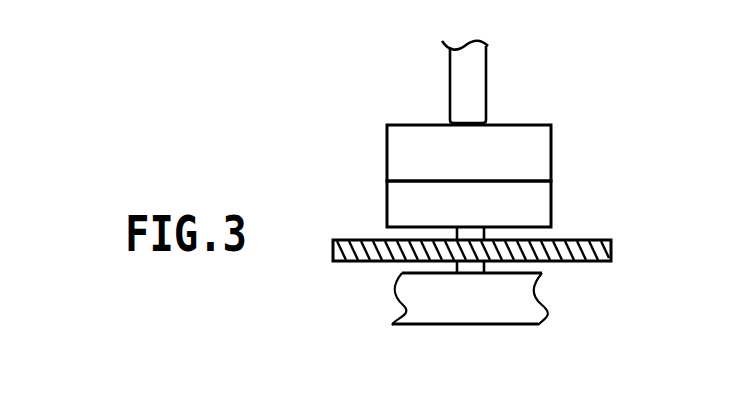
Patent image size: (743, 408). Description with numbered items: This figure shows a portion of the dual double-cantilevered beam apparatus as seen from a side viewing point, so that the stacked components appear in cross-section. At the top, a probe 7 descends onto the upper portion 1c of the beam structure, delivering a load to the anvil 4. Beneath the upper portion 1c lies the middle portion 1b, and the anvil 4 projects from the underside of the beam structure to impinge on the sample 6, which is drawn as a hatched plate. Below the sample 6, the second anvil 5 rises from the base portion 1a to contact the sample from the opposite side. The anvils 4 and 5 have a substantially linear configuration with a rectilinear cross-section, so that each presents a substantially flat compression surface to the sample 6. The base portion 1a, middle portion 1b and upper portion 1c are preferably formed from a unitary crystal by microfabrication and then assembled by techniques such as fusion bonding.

The probe 7 is at (487, 78).
The upper portion 1c is at (520, 158).
The middle portion 1b is at (523, 203).
The anvil 4 is at (486, 236).
The sample 6 is at (612, 253).
The anvil 5 is at (486, 266).
The base portion 1a is at (470, 325).